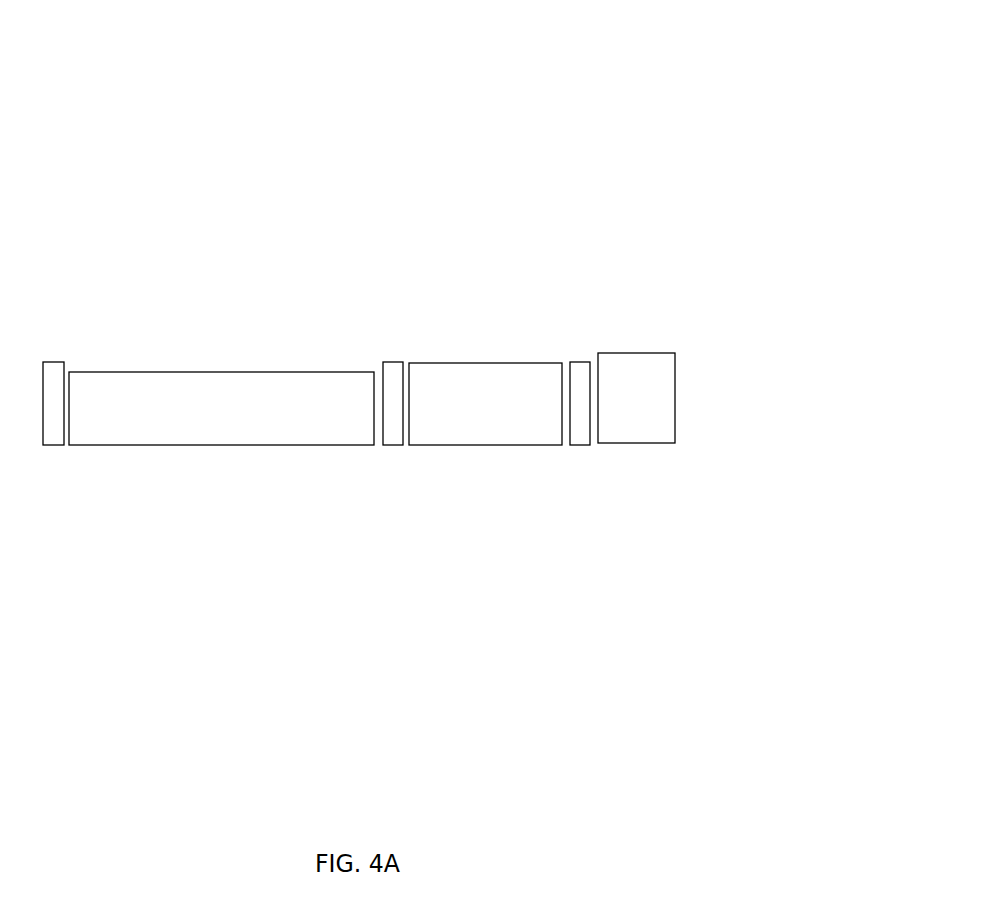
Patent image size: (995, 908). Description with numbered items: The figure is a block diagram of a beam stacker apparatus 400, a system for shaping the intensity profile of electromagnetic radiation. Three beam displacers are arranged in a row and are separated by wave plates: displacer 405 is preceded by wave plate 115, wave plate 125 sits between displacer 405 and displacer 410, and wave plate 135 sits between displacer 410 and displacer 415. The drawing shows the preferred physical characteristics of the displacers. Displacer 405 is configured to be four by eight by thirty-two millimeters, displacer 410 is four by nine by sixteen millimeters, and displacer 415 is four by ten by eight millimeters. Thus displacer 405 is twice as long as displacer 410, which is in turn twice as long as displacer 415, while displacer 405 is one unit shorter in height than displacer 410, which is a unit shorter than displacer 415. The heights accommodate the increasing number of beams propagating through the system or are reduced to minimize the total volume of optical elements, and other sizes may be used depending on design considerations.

The beam stacker apparatus 400 is at (552, 124).
The displacer 405 is at (163, 369).
The displacer 410 is at (447, 359).
The displacer 415 is at (678, 362).
The wave plate 115 is at (52, 448).
The wave plate 125 is at (392, 448).
The wave plate 135 is at (580, 448).